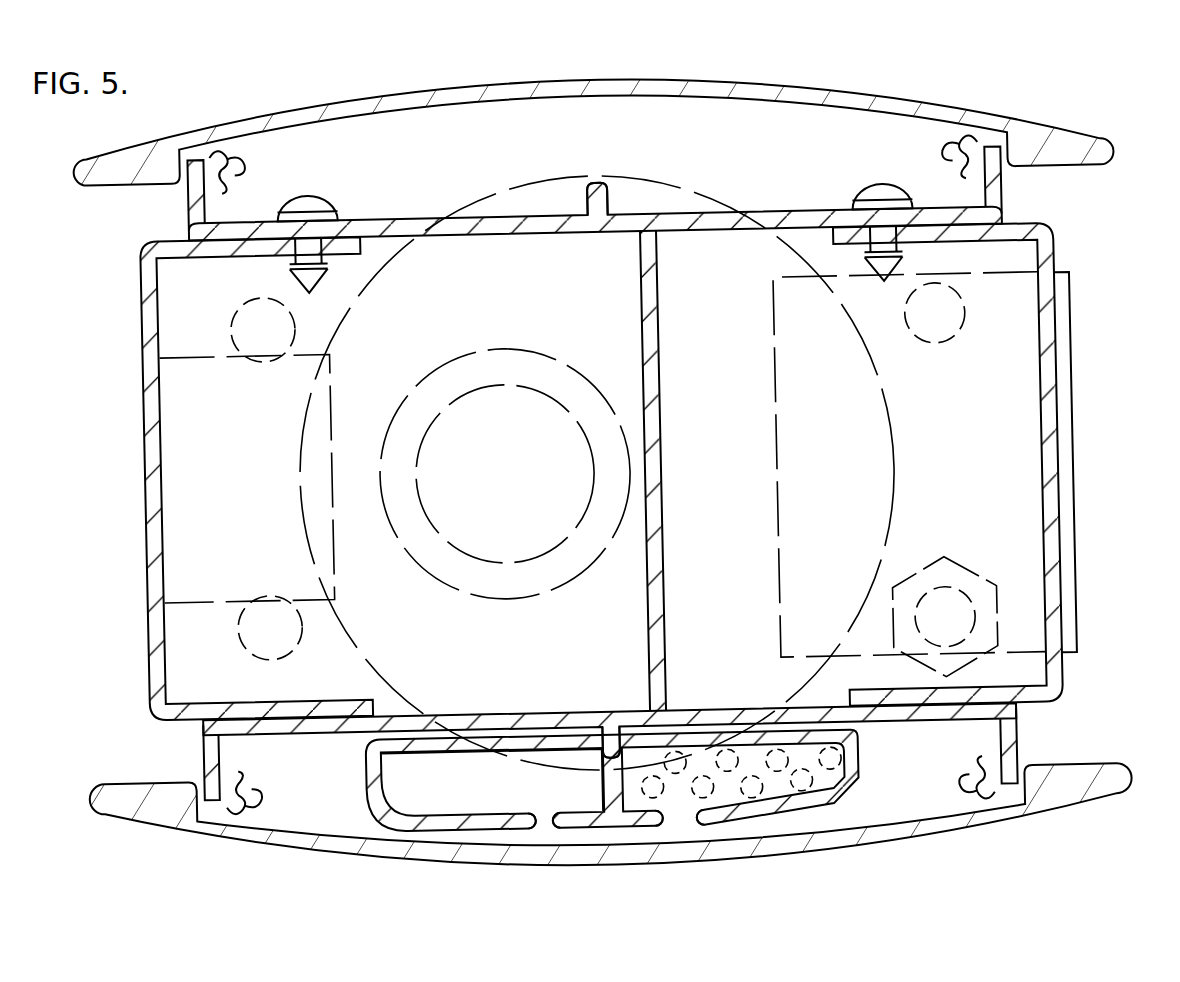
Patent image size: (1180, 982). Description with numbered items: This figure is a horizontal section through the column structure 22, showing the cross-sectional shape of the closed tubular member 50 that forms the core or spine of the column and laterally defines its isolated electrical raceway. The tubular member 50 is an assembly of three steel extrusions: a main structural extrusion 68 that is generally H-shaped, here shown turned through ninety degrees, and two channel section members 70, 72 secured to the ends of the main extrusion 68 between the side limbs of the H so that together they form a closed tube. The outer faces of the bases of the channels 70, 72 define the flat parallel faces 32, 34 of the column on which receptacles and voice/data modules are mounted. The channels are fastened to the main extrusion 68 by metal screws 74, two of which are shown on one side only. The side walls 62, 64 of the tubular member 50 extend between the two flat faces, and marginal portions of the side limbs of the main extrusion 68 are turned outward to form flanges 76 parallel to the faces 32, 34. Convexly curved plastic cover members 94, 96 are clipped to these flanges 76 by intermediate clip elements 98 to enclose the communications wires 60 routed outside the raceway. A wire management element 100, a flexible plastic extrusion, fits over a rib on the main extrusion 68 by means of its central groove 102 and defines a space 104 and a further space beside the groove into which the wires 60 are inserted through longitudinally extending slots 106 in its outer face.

The column structure 22 is at (614, 477).
The flat parallel face 32 is at (142, 306).
The flat parallel face 34 is at (1072, 632).
The closed tubular member 50 is at (599, 463).
The wires 60 is at (760, 797).
The side wall 62 is at (338, 744).
The side wall 64 is at (422, 212).
The main structural extrusion 68 is at (634, 305).
The channel section member 70 is at (599, 472).
The channel section member 72 is at (1068, 530).
The metal screws 74 is at (318, 205).
The flanges 76 is at (185, 213).
The cover member 94 is at (526, 868).
The cover member 96 is at (428, 78).
The clip elements 98 is at (215, 148).
The wire management element 100 is at (573, 824).
The central groove 102 is at (600, 195).
The space 104 is at (565, 778).
The slots 106 is at (538, 822).